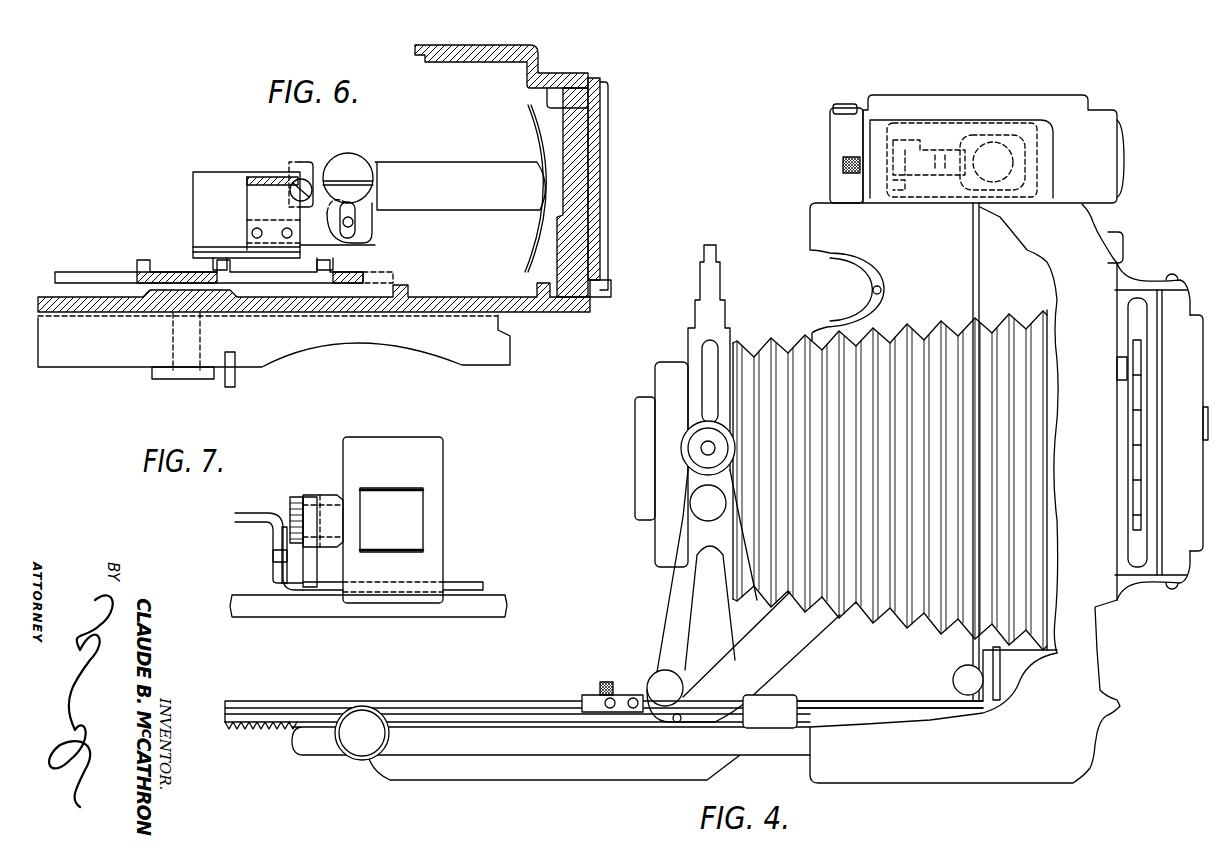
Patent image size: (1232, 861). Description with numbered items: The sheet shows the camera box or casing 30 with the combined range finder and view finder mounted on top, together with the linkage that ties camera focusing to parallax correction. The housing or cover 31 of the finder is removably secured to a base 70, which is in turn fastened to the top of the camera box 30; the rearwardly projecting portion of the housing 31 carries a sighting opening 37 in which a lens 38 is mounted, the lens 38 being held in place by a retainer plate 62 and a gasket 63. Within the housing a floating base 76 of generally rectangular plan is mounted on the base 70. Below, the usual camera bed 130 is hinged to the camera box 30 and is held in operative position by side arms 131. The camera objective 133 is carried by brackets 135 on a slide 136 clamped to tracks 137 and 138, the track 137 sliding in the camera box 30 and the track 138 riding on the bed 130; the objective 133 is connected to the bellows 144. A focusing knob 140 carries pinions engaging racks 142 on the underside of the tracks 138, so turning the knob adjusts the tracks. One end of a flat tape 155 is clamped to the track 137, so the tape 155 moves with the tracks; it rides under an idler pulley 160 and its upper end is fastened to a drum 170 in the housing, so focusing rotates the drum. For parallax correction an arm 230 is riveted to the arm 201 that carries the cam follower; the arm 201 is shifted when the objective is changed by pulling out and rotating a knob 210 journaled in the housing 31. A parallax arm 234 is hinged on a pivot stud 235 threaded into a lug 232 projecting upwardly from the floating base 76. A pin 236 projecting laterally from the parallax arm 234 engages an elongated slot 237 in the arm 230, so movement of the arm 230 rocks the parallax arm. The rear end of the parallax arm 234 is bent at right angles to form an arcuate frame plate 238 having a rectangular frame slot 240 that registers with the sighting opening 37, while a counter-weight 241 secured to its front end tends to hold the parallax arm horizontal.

In FIG. 6, the camera box 30 is at (487, 358).
In FIG. 4, the camera box 30 is at (1035, 773).
In FIG. 6, the housing 31 is at (536, 60).
In FIG. 4, the housing 31 is at (923, 120).
In FIG. 6, the sighting opening 37 is at (560, 120).
In FIG. 6, the lens 38 is at (578, 140).
In FIG. 6, the retainer plate 62 is at (607, 262).
In FIG. 6, the gasket 63 is at (595, 292).
In FIG. 6, the base 70 is at (525, 305).
In FIG. 6, the floating base 76 is at (169, 272).
In FIG. 4, the camera bed 130 is at (450, 745).
In FIG. 4, the side arms 131 is at (770, 655).
In FIG. 4, the camera objective 133 is at (670, 458).
In FIG. 4, the brackets 135 is at (678, 600).
In FIG. 4, the slide 136 is at (625, 697).
In FIG. 4, the track 137 is at (867, 705).
In FIG. 4, the track 138 is at (458, 701).
In FIG. 4, the focusing knob 140 is at (360, 750).
In FIG. 4, the racks 142 is at (258, 728).
In FIG. 4, the bellows 144 is at (912, 340).
In FIG. 4, the flat tape 155 is at (973, 250).
In FIG. 4, the idler pulley 160 is at (962, 677).
In FIG. 4, the drum 170 is at (1010, 140).
In FIG. 6, the arm 201 is at (268, 177).
In FIG. 7, the arm 201 is at (258, 512).
In FIG. 4, the knob 210 is at (842, 165).
In FIG. 6, the arm 230 is at (308, 240).
In FIG. 7, the arm 230 is at (282, 540).
In FIG. 6, the lug 232 is at (371, 236).
In FIG. 7, the lug 232 is at (310, 583).
In FIG. 6, the parallax arm 234 is at (440, 170).
In FIG. 7, the parallax arm 234 is at (327, 500).
In FIG. 6, the pivot stud 235 is at (352, 160).
In FIG. 7, the pivot stud 235 is at (293, 497).
In FIG. 6, the pin 236 is at (352, 221).
In FIG. 7, the pin 236 is at (273, 557).
In FIG. 6, the elongated slot 237 is at (358, 243).
In FIG. 6, the arcuate frame plate 238 is at (537, 135).
In FIG. 7, the arcuate frame plate 238 is at (432, 462).
In FIG. 7, the rectangular frame slot 240 is at (410, 515).
In FIG. 6, the counter-weight 241 is at (305, 166).